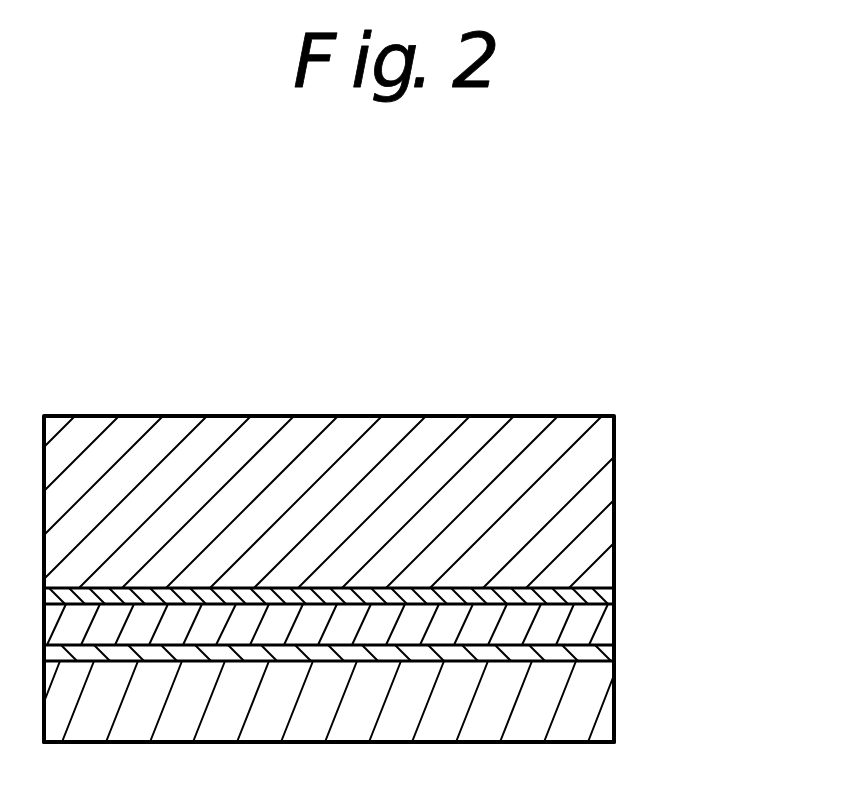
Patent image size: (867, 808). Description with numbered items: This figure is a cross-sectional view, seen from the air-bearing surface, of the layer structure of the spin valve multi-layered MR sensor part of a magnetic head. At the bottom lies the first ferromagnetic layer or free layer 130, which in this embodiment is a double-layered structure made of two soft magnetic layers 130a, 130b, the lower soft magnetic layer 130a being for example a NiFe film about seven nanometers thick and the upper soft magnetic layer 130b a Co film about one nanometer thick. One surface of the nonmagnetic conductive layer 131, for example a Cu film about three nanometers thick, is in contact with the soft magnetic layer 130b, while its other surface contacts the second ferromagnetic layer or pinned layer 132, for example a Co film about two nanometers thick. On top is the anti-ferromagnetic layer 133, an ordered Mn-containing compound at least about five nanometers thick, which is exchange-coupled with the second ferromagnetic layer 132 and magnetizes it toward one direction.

The anti-ferromagnetic layer 133 is at (597, 512).
The second ferromagnetic layer 132 is at (614, 593).
The nonmagnetic conductive layer 131 is at (600, 620).
The soft magnetic layer 130b is at (602, 657).
The soft magnetic layer 130a is at (598, 700).
The first ferromagnetic layer 130 is at (446, 703).